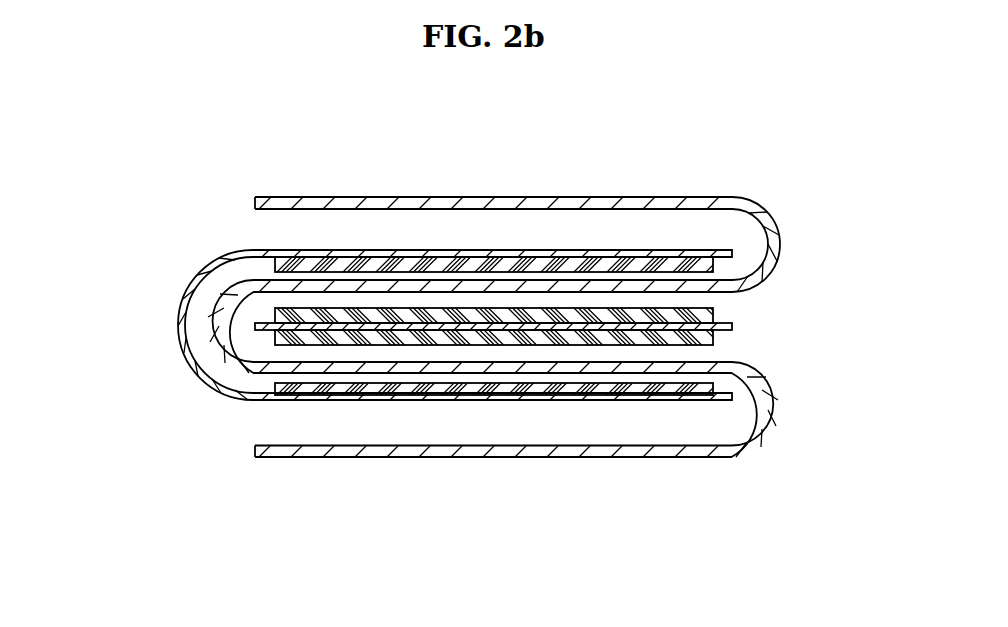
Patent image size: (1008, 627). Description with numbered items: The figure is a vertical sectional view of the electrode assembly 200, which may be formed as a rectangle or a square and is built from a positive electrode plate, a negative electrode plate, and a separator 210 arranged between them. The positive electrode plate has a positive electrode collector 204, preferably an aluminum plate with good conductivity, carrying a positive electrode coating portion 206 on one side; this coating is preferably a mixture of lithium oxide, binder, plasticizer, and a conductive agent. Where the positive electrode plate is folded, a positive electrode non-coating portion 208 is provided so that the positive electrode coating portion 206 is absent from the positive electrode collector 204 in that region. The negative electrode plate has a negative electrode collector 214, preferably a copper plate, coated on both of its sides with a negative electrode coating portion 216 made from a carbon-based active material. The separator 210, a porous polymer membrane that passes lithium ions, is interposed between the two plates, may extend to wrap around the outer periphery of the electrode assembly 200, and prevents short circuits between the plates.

The electrode assembly 200 is at (458, 485).
The positive electrode collector 204 is at (403, 252).
The positive electrode coating portion 206 is at (488, 262).
The positive electrode non-coating portion 208 is at (178, 312).
The separator 210 is at (608, 200).
The negative electrode collector 214 is at (253, 327).
The negative electrode coating portion 216 is at (715, 312).